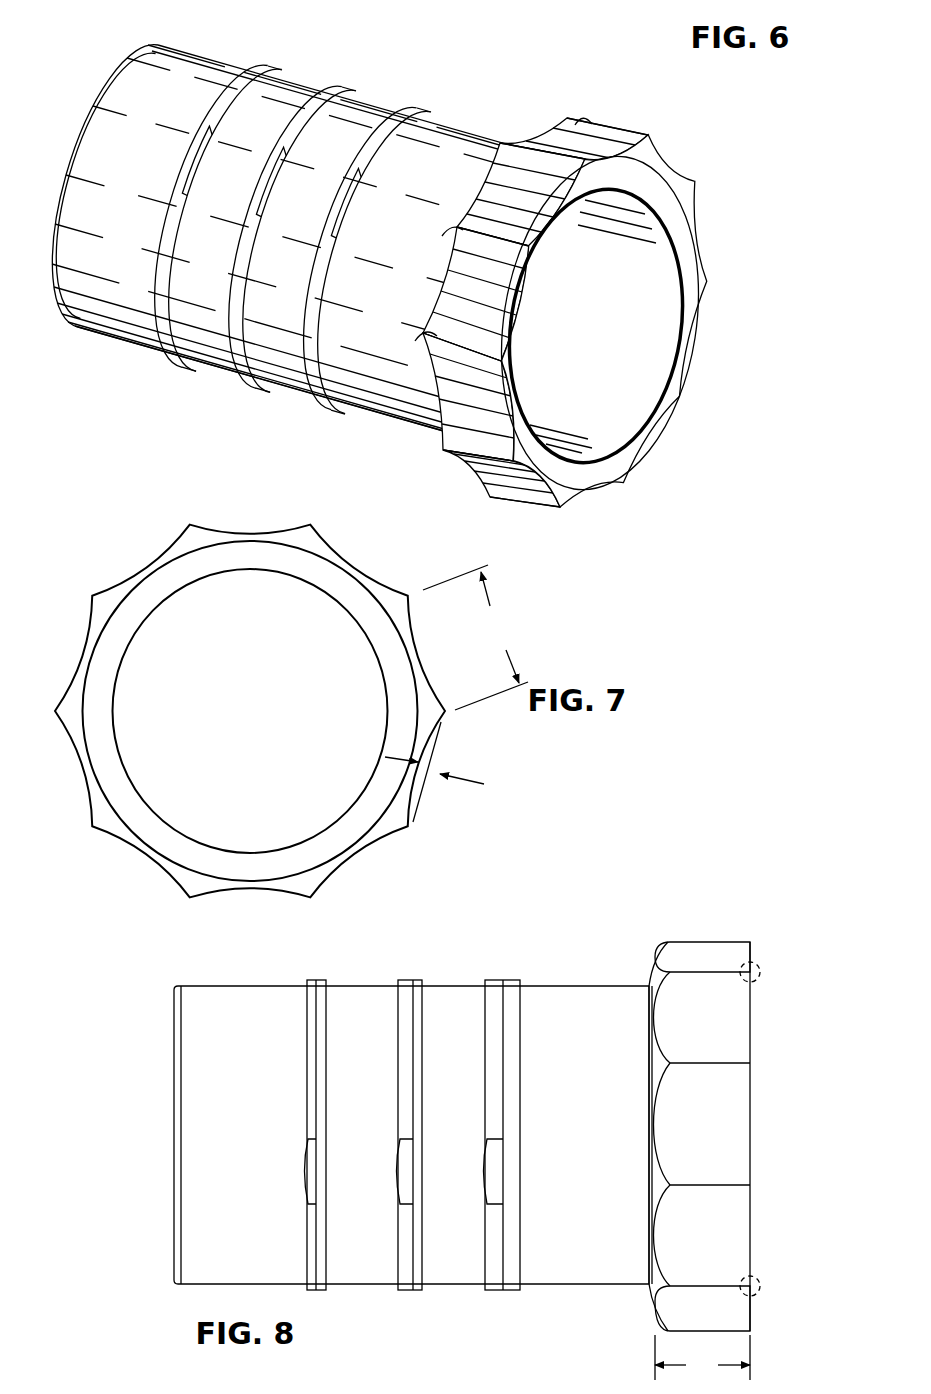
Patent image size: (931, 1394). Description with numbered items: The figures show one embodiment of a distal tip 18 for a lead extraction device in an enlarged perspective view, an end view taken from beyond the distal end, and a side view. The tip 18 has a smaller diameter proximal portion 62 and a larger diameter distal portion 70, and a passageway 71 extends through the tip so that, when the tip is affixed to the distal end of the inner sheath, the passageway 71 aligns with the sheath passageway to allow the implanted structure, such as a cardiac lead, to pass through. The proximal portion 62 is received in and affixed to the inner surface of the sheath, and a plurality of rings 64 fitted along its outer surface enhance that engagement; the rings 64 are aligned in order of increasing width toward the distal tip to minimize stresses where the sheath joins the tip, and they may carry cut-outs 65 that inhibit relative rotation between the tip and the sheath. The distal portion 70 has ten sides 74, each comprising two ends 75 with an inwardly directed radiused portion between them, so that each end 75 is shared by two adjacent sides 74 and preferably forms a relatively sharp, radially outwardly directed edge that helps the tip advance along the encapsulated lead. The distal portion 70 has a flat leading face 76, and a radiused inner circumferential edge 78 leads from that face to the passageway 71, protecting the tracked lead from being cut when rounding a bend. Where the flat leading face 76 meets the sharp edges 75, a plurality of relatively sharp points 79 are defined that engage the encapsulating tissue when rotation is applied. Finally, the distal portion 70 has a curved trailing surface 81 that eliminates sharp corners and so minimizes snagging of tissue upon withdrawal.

In FIG. 6, the tip 18 is at (434, 52).
In FIG. 7, the tip 18 is at (103, 533).
In FIG. 8, the tip 18 is at (176, 982).
In FIG. 6, the proximal portion 62 is at (213, 50).
In FIG. 8, the proximal portion 62 is at (240, 1032).
In FIG. 6, the rings 64 is at (290, 71).
In FIG. 8, the rings 64 is at (318, 982).
In FIG. 6, the cut-outs 65 is at (258, 190).
In FIG. 8, the cut-outs 65 is at (316, 1169).
In FIG. 6, the distal portion 70 is at (672, 136).
In FIG. 7, the distal portion 70 is at (257, 714).
In FIG. 8, the distal portion 70 is at (735, 1119).
In FIG. 6, the passageway 71 is at (561, 346).
In FIG. 7, the passageway 71 is at (233, 703).
In FIG. 6, the sides 74 is at (548, 130).
In FIG. 7, the sides 74 is at (262, 530).
In FIG. 8, the sides 74 is at (735, 1032).
In FIG. 6, the ends 75 is at (698, 182).
In FIG. 7, the ends 75 is at (95, 593).
In FIG. 8, the ends 75 is at (752, 977).
In FIG. 8, the flat leading face 76 is at (752, 1328).
In FIG. 6, the radiused inner circumferential edge 78 is at (625, 455).
In FIG. 7, the radiused inner circumferential edge 78 is at (157, 588).
In FIG. 6, the sharp points 79 is at (583, 118).
In FIG. 7, the sharp points 79 is at (193, 523).
In FIG. 8, the sharp points 79 is at (760, 967).
In FIG. 6, the curved trailing surface 81 is at (454, 226).
In FIG. 8, the curved trailing surface 81 is at (658, 948).